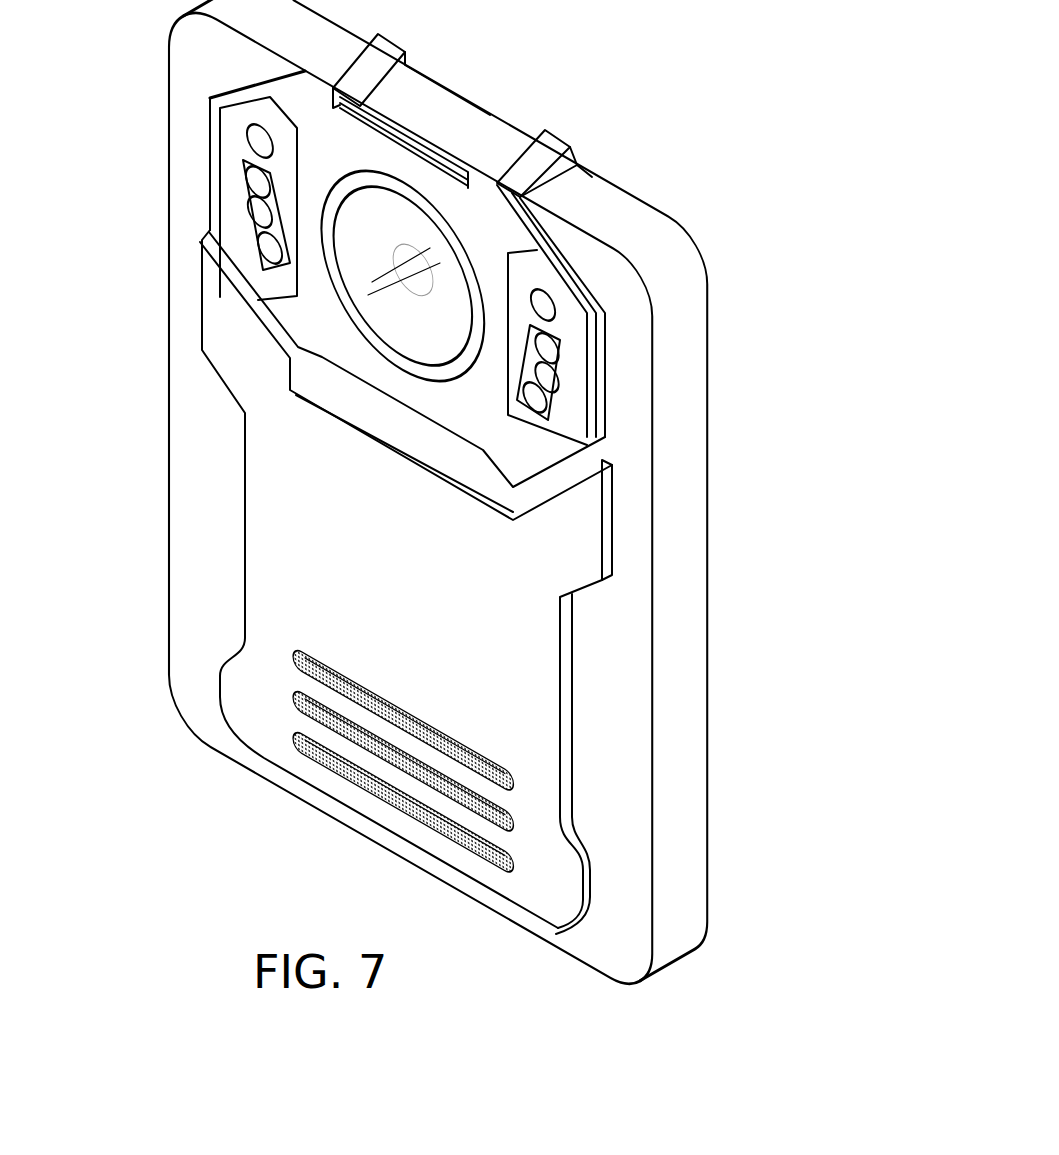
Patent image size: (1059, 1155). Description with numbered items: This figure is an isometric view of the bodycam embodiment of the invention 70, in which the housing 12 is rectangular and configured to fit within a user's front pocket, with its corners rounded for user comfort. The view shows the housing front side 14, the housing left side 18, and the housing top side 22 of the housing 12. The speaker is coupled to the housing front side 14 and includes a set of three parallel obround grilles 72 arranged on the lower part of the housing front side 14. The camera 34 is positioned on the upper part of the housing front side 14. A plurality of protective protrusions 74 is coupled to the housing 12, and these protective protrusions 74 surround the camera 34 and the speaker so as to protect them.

The housing 12 is at (168, 691).
The housing front side 14 is at (607, 845).
The housing left side 18 is at (688, 785).
The housing top side 22 is at (598, 207).
The camera 34 is at (413, 268).
The bodycam embodiment of the invention 70 is at (702, 97).
The parallel obround grilles 72 is at (400, 723).
The protective protrusions 74 is at (522, 462).